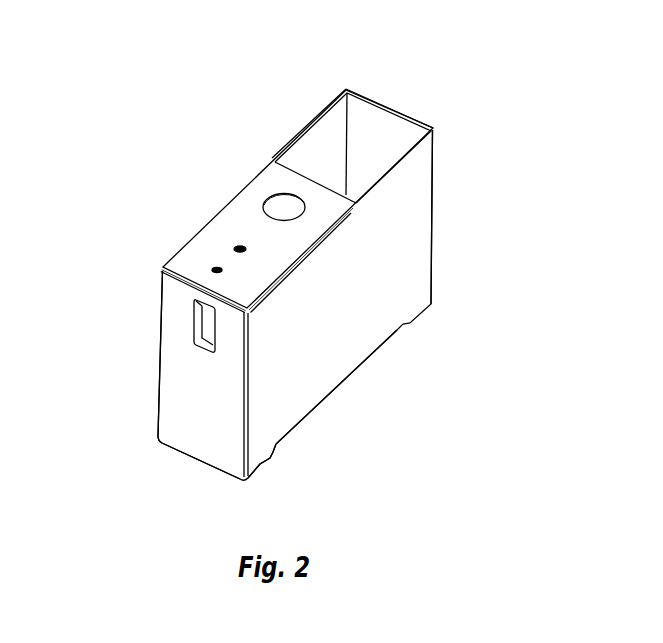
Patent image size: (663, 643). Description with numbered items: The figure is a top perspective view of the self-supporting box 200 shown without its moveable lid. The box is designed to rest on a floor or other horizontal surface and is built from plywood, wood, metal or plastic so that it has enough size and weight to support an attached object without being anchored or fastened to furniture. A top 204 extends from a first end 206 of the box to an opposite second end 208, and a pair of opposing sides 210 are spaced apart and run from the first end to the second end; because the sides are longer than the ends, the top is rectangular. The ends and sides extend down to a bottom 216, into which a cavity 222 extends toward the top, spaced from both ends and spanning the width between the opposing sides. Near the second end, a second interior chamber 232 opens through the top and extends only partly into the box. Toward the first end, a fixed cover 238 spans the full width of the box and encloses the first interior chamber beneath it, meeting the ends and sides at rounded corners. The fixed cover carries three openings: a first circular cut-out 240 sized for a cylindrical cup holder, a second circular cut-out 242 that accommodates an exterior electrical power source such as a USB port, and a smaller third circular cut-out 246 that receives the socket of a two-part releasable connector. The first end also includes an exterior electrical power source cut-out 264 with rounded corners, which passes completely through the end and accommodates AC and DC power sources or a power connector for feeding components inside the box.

The self-supporting box 200 is at (73, 143).
The top 204 is at (291, 141).
The second end 208 is at (376, 101).
The second interior chamber 232 is at (357, 127).
The fixed cover 238 is at (237, 217).
The first circular cut-out 240 is at (263, 206).
The second circular cut-out 242 is at (236, 247).
The third circular cut-out 246 is at (214, 268).
The first end 206 is at (176, 299).
The exterior electrical power source cut-out 264 is at (195, 327).
The opposing sides 210 is at (415, 243).
The cavity 222 is at (350, 376).
The bottom 216 is at (262, 467).